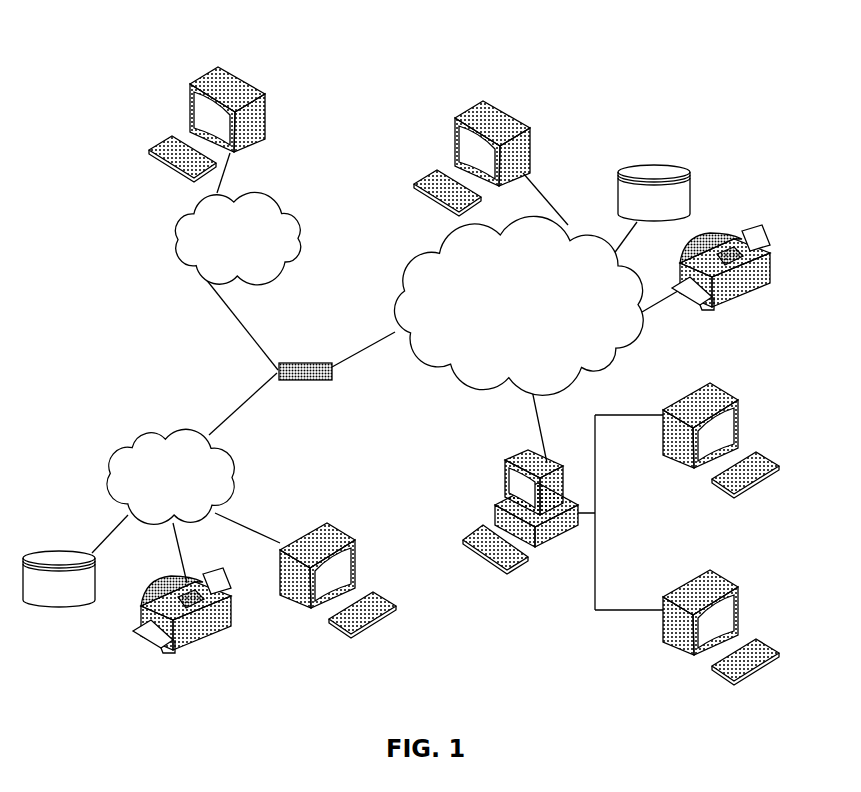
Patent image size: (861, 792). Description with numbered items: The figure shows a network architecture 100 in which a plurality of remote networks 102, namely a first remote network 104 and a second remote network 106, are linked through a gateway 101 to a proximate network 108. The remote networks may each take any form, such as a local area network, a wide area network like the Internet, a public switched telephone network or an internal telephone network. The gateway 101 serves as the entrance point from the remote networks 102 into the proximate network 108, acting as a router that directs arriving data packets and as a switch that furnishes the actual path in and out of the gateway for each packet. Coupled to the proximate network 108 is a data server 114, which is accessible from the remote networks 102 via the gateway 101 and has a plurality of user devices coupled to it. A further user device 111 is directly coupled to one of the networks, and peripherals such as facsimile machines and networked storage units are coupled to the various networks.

The network architecture 100 is at (125, 49).
The gateway 101 is at (290, 362).
The remote networks 102 is at (145, 296).
The first remote network 104 is at (110, 453).
The second remote network 106 is at (297, 213).
The proximate network 108 is at (610, 365).
The user device 111 is at (528, 130).
The data server 114 is at (505, 473).